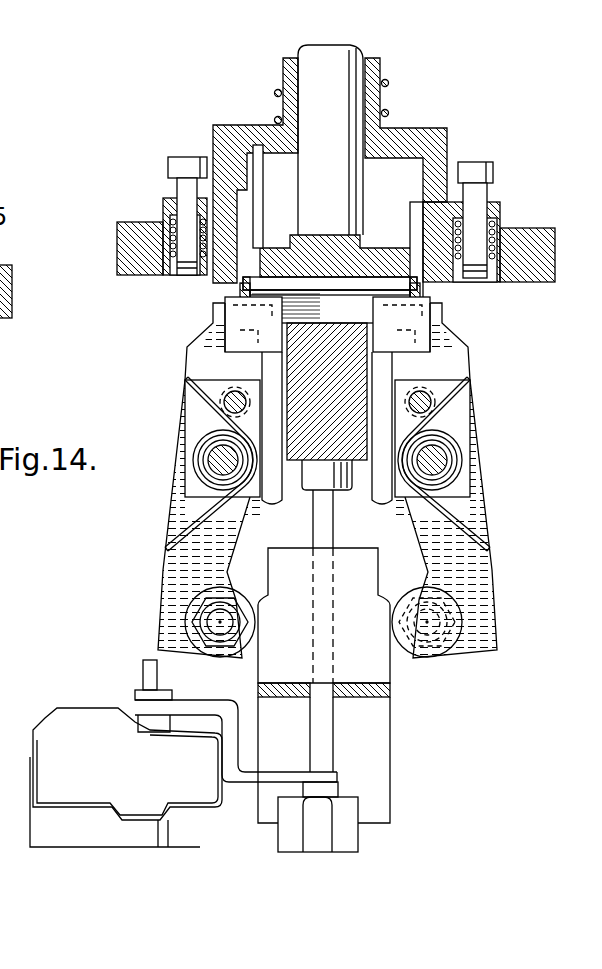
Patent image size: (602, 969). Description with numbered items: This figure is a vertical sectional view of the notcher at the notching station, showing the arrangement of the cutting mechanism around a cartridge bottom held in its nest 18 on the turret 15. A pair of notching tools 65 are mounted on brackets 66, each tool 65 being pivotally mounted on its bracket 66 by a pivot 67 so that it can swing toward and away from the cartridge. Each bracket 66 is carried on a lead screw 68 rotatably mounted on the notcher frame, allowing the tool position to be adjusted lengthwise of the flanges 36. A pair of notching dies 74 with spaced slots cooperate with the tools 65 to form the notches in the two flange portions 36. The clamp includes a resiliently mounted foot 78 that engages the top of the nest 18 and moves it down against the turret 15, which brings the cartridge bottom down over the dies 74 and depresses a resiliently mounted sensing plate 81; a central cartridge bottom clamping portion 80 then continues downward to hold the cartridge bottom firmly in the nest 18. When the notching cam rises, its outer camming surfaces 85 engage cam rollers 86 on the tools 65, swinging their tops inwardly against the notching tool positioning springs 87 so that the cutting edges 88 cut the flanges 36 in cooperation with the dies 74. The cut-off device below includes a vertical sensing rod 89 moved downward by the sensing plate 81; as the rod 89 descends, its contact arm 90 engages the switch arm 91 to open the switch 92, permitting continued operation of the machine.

The turret 15 is at (552, 234).
The cartridge bottom nest 18 is at (502, 212).
The flange portion 36 is at (243, 290).
The notching tool 65 is at (214, 320).
The bracket 66 is at (194, 422).
The pivot 67 is at (209, 470).
The lead screw 68 is at (221, 394).
The notching die 74 is at (413, 342).
The resiliently mounted foot 78 is at (446, 147).
The central cartridge bottom clamping portion 80 is at (340, 240).
The sensing plate 81 is at (342, 295).
The camming surface 85 is at (262, 604).
The cam roller 86 is at (213, 657).
The notching tool positioning spring 87 is at (480, 548).
The cutting edge 88 is at (374, 303).
The sensing rod 89 is at (323, 737).
The contact arm 90 is at (238, 740).
The switch arm 91 is at (166, 736).
The switch 92 is at (131, 788).